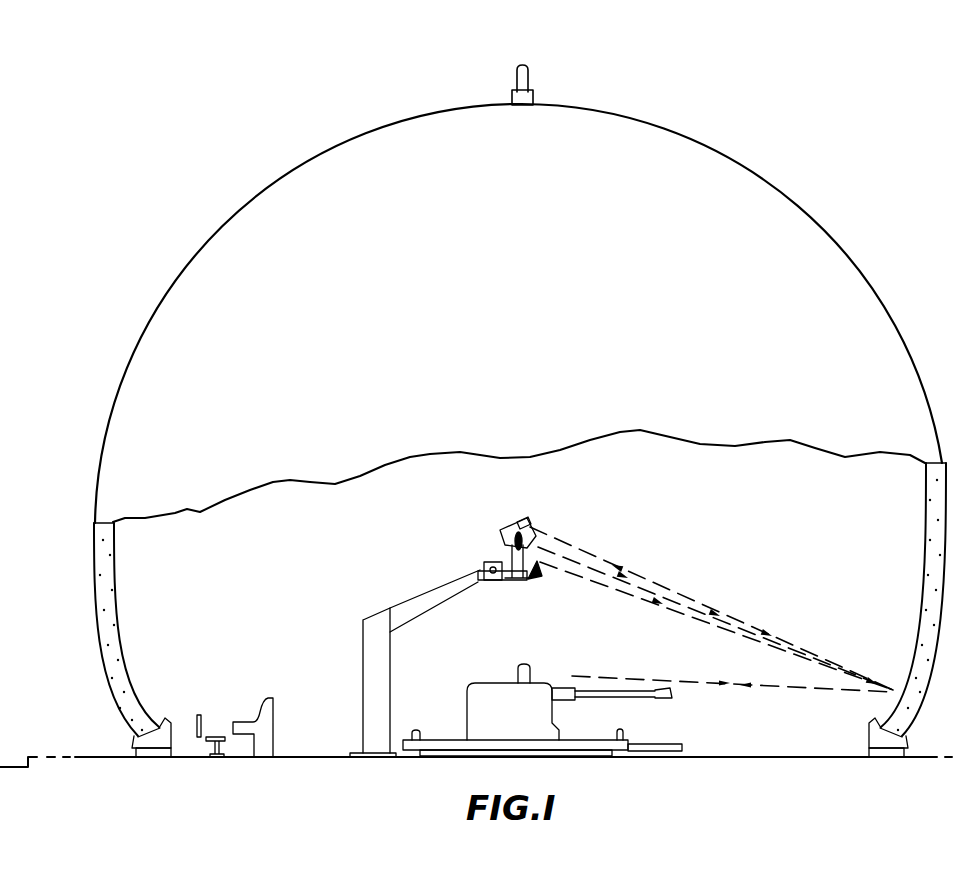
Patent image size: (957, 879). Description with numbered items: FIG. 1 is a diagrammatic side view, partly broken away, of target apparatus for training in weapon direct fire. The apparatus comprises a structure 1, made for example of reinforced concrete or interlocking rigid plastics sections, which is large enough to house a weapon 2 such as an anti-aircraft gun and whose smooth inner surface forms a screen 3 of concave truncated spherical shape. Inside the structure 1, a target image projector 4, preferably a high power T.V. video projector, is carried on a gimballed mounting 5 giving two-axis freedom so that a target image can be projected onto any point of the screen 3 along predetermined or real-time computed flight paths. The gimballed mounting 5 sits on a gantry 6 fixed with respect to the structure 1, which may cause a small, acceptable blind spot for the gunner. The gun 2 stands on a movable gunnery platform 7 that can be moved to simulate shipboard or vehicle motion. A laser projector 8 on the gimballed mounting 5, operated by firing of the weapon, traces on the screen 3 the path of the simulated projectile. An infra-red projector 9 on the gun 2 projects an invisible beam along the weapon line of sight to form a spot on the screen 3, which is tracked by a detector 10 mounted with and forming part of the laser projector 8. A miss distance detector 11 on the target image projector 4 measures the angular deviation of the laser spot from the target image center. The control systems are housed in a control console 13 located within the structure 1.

The structure 1 is at (832, 284).
The weapon 2 is at (500, 715).
The screen 3 is at (925, 510).
The target image projector 4 is at (503, 537).
The gimballed mounting 5 is at (507, 553).
The gantry 6 is at (368, 648).
The movable gunnery platform 7 is at (435, 745).
The laser projector 8 is at (500, 540).
The infra-red projector 9 is at (527, 666).
The detector 10 is at (505, 545).
The miss distance detector 11 is at (528, 522).
The control console 13 is at (250, 722).